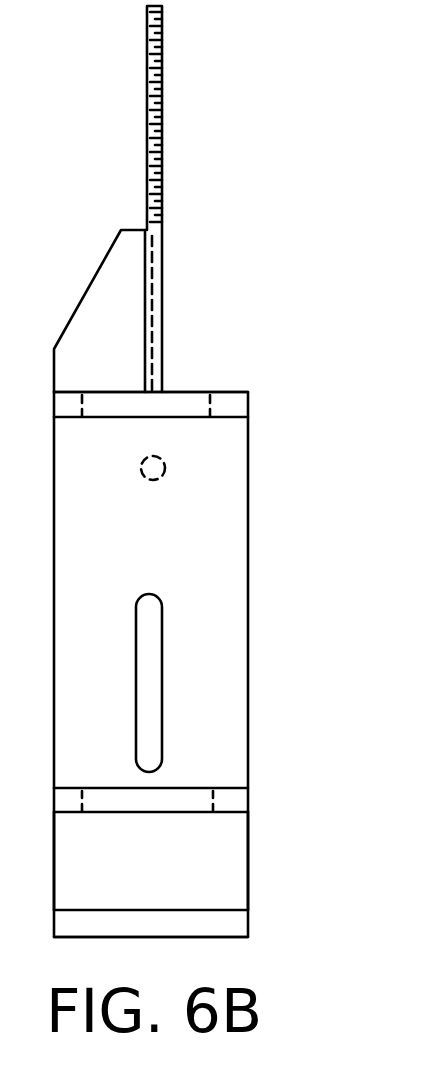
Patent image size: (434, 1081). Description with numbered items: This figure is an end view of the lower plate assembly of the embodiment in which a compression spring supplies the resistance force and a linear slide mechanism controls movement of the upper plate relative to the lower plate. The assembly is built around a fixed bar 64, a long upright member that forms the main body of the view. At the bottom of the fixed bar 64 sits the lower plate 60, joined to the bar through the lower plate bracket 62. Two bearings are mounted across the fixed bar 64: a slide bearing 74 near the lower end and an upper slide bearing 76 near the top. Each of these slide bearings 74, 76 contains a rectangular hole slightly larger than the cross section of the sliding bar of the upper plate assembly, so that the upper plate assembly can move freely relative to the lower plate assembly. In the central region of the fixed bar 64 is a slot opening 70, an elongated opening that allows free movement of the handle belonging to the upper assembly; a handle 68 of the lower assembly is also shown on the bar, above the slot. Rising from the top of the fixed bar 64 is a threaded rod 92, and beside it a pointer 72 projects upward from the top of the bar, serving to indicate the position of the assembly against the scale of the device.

The lower plate 60 is at (248, 915).
The lower plate bracket 62 is at (248, 858).
The fixed bar 64 is at (248, 590).
The handle 68 is at (165, 462).
The slot opening 70 is at (152, 690).
The pointer 72 is at (160, 228).
The slide bearing 74 is at (236, 801).
The upper slide bearing 76 is at (250, 395).
The threaded rod 92 is at (162, 99).